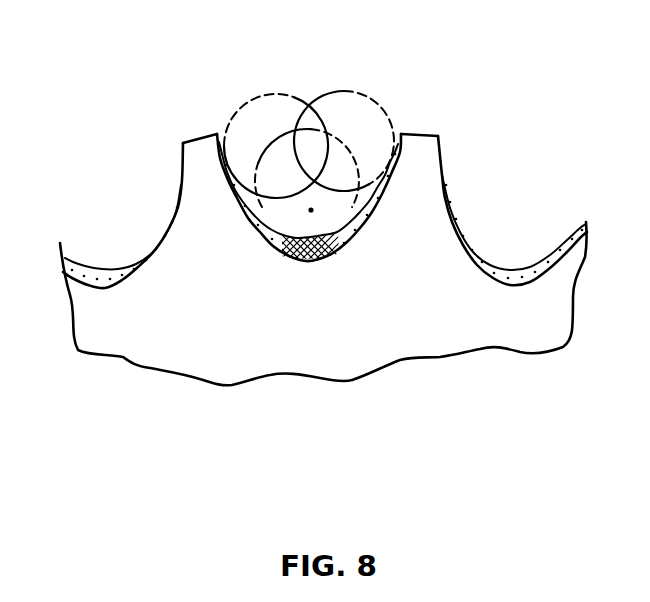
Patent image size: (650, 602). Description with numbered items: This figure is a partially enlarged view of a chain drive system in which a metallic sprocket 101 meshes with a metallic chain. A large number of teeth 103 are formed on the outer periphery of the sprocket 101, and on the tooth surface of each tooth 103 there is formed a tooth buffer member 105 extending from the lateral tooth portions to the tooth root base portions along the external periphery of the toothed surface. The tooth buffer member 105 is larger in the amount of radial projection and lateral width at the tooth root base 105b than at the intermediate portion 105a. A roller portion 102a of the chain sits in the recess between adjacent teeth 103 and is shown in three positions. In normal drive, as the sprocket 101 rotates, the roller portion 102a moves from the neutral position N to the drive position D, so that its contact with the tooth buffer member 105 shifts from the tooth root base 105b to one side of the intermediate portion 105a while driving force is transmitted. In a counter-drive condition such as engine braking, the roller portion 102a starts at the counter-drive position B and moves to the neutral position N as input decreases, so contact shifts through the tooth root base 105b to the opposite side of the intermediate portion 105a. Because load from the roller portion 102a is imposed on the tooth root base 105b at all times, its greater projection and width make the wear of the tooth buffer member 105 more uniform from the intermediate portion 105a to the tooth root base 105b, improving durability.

The sprocket 101 is at (127, 363).
The teeth 103 is at (186, 140).
The tooth buffer member 105 is at (97, 267).
The intermediate portion 105a is at (176, 193).
The tooth root base 105b is at (117, 268).
The roller portion 102a is at (330, 94).
The drive position D is at (241, 110).
The neutral position N is at (357, 92).
The counter-drive position B is at (382, 103).